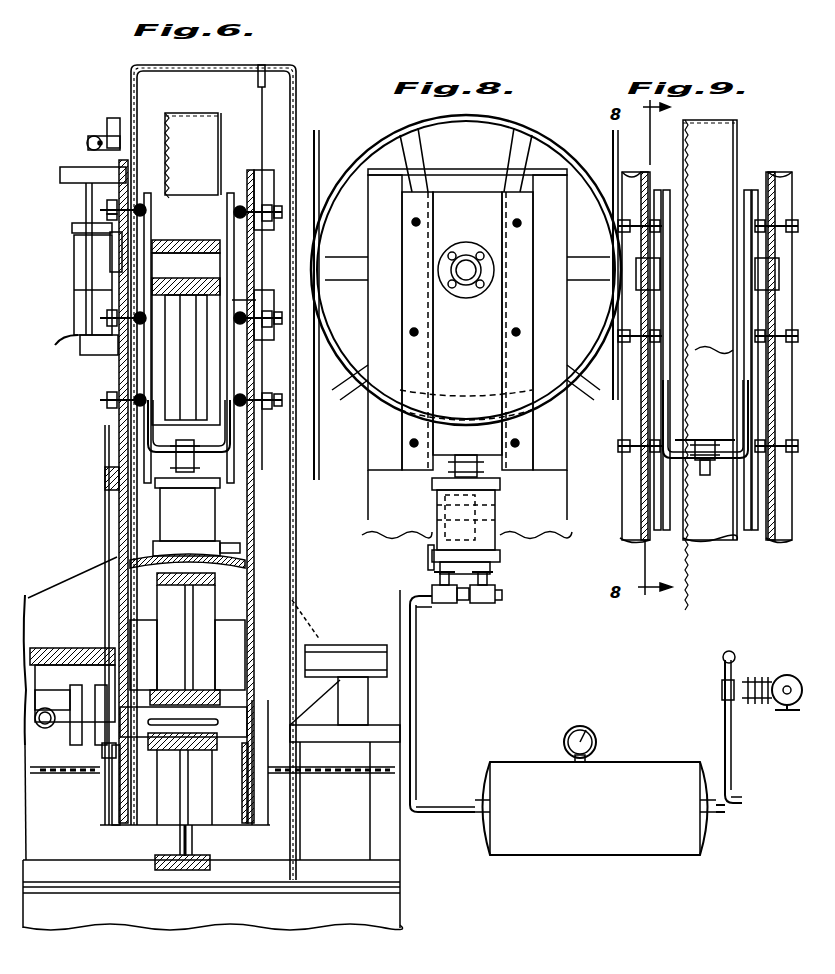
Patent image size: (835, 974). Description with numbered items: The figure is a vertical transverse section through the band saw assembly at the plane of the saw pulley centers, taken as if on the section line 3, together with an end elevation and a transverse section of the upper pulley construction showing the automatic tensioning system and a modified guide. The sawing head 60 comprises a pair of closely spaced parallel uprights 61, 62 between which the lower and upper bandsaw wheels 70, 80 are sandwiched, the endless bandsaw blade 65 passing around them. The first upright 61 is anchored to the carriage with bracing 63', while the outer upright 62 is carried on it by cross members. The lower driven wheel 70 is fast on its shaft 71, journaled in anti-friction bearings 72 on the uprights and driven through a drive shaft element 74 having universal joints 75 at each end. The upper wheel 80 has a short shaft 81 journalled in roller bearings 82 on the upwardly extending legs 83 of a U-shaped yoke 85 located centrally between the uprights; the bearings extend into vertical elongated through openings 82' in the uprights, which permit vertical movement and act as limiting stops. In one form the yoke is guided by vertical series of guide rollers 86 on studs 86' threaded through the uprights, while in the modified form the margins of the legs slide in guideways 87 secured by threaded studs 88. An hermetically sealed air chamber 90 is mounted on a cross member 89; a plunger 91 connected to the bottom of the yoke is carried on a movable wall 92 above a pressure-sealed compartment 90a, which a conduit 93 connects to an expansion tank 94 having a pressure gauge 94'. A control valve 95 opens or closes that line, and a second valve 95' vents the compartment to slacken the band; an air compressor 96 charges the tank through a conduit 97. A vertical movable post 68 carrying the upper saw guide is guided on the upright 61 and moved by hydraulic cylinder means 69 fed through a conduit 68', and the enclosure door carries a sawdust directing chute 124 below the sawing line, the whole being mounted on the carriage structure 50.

In FIG. 6, the line of section 3 is at (120, 912).
In FIG. 6, the table frame 50 is at (340, 770).
In FIG. 6, the sawing head 60 is at (129, 70).
In FIG. 6, the upright 61 is at (118, 548).
In FIG. 9, the upright 61 is at (630, 172).
In FIG. 6, the upright 62 is at (255, 547).
In FIG. 8, the upright 62 is at (546, 520).
In FIG. 9, the upright 62 is at (785, 172).
In FIG. 6, the reinforcement and bracing 63' is at (70, 705).
In FIG. 6, the endless bandsaw blade 65 is at (192, 120).
In FIG. 8, the endless bandsaw blade 65 is at (316, 440).
In FIG. 9, the endless bandsaw blade 65 is at (708, 122).
In FIG. 6, the vertical movable post 68 is at (93, 213).
In FIG. 6, the conduit 68' is at (72, 355).
In FIG. 6, the hydraulic cylinder means 69 is at (90, 292).
In FIG. 6, the lower bandsaw wheel 70 is at (200, 855).
In FIG. 6, the lower wheel shaft 71 is at (236, 740).
In FIG. 6, the bearings 72 is at (110, 776).
In FIG. 6, the drive shaft element 74 is at (36, 652).
In FIG. 6, the universal joints 75 is at (52, 695).
In FIG. 6, the upper bandsaw wheel 80 is at (166, 130).
In FIG. 8, the upper bandsaw wheel 80 is at (349, 357).
In FIG. 9, the upper bandsaw wheel 80 is at (683, 132).
In FIG. 6, the upper wheel shaft 81 is at (177, 268).
In FIG. 6, the bearings 82 is at (196, 255).
In FIG. 6, the vertical elongated through opening 82' is at (75, 235).
In FIG. 6, the legs of yoke 83 is at (148, 192).
In FIG. 8, the legs of yoke 83 is at (462, 205).
In FIG. 6, the U-shaped yoke 85 is at (152, 450).
In FIG. 8, the U-shaped yoke 85 is at (488, 468).
In FIG. 9, the U-shaped yoke 85 is at (676, 468).
In FIG. 6, the guide rollers 86 is at (187, 315).
In FIG. 6, the studs 86' is at (187, 299).
In FIG. 8, the guideways 87 is at (520, 240).
In FIG. 9, the guideways 87 is at (659, 190).
In FIG. 8, the threaded studs 88 is at (414, 222).
In FIG. 9, the threaded studs 88 is at (760, 238).
In FIG. 6, the cross member 89 is at (140, 558).
In FIG. 6, the air chamber 90 is at (200, 518).
In FIG. 8, the air chamber 90 is at (435, 540).
In FIG. 8, the pressure-sealed compartment 90a is at (432, 556).
In FIG. 6, the plunger 91 is at (195, 466).
In FIG. 8, the plunger 91 is at (455, 470).
In FIG. 8, the movable wall 92 is at (498, 546).
In FIG. 8, the conduit 93 is at (418, 662).
In FIG. 8, the expansion tank 94 is at (595, 822).
In FIG. 9, the expansion tank 94 is at (705, 478).
In FIG. 8, the pressure gauge 94' is at (588, 729).
In FIG. 8, the manual control valve 95 is at (450, 601).
In FIG. 8, the manual control valve 95' is at (489, 601).
In FIG. 8, the air compressor 96 is at (775, 706).
In FIG. 8, the conduit 97 is at (725, 723).
In FIG. 6, the sawdust directing chute 124 is at (300, 655).